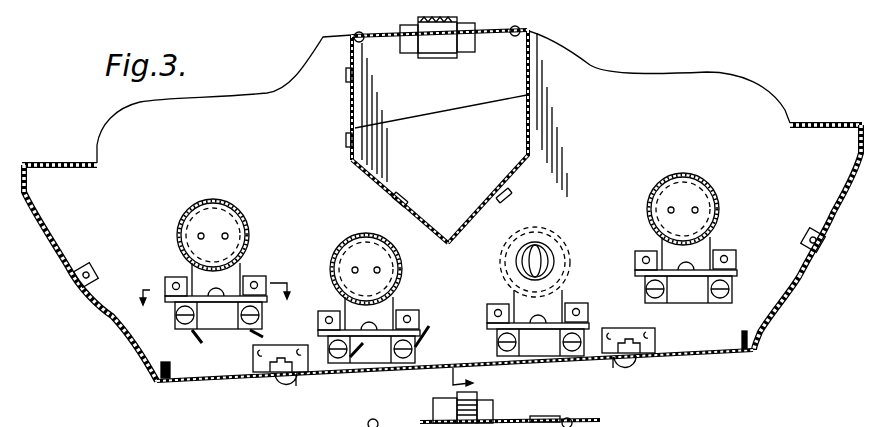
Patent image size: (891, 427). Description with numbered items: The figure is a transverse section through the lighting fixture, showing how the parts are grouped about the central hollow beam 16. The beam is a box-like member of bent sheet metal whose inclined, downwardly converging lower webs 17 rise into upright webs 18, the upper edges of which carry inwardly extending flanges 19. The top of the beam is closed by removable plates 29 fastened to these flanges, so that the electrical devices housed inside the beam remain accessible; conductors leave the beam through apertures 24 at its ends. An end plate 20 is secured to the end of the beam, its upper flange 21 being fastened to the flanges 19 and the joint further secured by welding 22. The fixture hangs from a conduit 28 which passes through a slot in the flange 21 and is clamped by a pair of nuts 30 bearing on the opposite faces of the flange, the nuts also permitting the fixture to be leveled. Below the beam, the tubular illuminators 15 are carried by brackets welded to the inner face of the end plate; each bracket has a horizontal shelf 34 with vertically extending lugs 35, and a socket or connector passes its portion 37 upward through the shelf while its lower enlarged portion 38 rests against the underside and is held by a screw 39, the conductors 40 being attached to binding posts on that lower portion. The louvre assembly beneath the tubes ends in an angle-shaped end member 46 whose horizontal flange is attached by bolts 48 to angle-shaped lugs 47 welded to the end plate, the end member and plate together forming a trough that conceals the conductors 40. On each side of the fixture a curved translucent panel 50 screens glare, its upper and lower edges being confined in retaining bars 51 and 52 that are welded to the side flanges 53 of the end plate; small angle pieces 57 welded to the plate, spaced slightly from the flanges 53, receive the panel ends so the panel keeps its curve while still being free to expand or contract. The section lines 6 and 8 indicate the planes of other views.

The section line 6- 6 is at (213, 304).
The section line 8- 8 is at (471, 384).
The tubular illuminators 15 is at (247, 220).
The hollow beam 16 is at (440, 136).
The lower webs 17 is at (480, 198).
The upright webs 18 is at (441, 110).
The flanges 19 is at (362, 41).
The end plates 20 is at (690, 103).
The flange 21 is at (500, 32).
The welding 22 is at (350, 148).
The apertures 24 is at (452, 206).
The conduits 28 is at (350, 36).
The removable plates 29 is at (535, 422).
The nuts 30 is at (468, 42).
The shelf 34 is at (169, 300).
The lugs 35 is at (169, 278).
The portion of socket or connector 37 is at (243, 284).
The lower enlarged portion 38 is at (392, 388).
The screw 39 is at (222, 293).
The conductors 40 is at (263, 337).
The angle-shaped end member 46 is at (262, 375).
The lugs 47 is at (253, 357).
The bolts 48 is at (292, 384).
The translucent panels 50 is at (108, 318).
The retaining bar 51 is at (40, 180).
The retaining bar 52 is at (162, 381).
The flanges 53 is at (75, 290).
The angle pieces 57 is at (88, 265).